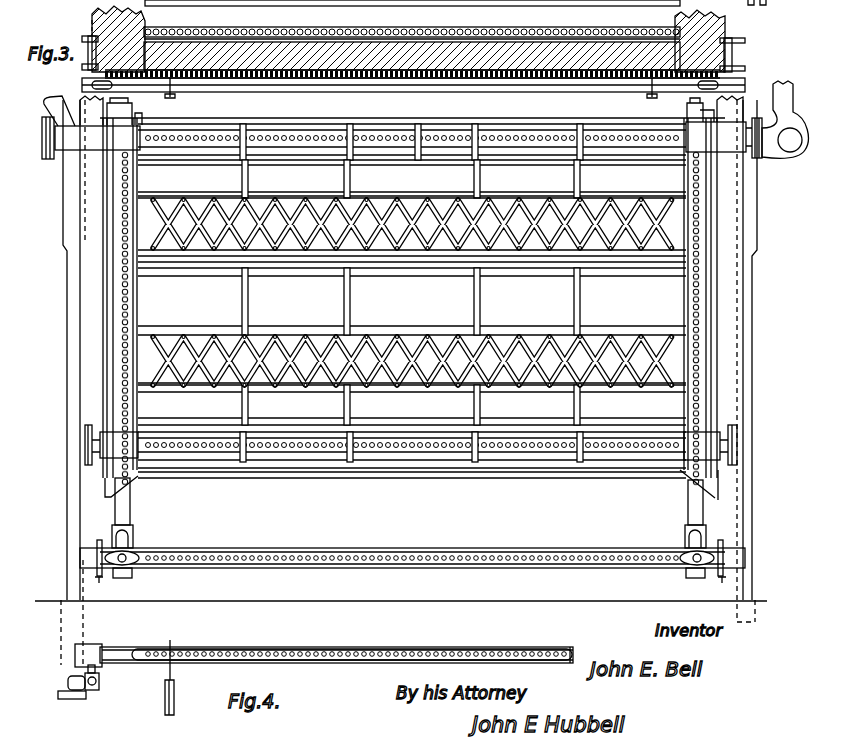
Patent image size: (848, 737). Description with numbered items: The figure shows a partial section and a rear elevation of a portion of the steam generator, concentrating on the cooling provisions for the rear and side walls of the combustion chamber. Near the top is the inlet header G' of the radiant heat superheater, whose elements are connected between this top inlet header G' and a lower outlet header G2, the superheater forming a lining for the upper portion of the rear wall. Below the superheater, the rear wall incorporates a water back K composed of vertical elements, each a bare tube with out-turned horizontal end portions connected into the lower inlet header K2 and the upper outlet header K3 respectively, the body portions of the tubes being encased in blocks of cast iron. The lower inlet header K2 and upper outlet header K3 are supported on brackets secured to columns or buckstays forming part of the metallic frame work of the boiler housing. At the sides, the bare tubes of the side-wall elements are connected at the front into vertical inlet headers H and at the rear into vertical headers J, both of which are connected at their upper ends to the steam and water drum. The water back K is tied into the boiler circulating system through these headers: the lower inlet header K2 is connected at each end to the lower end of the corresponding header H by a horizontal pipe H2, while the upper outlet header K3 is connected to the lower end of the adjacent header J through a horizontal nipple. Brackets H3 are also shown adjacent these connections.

In FIG. 3, the water back K is at (361, 26).
In FIG. 3, the lower inlet header K2 is at (412, 90).
In FIG. 4, the lower inlet header K2 is at (397, 647).
In FIG. 4, the upper outlet header K3 is at (460, 574).
In FIG. 4, the vertical inlet header H is at (63, 305).
In FIG. 4, the horizontal pipe H2 is at (70, 682).
In FIG. 3, the bracket H3 is at (762, 70).
In FIG. 4, the bracket H3 is at (98, 670).
In FIG. 4, the top inlet header G' is at (747, 119).
In FIG. 4, the lower outlet header G2 is at (630, 456).
In FIG. 4, the vertical header J is at (130, 510).